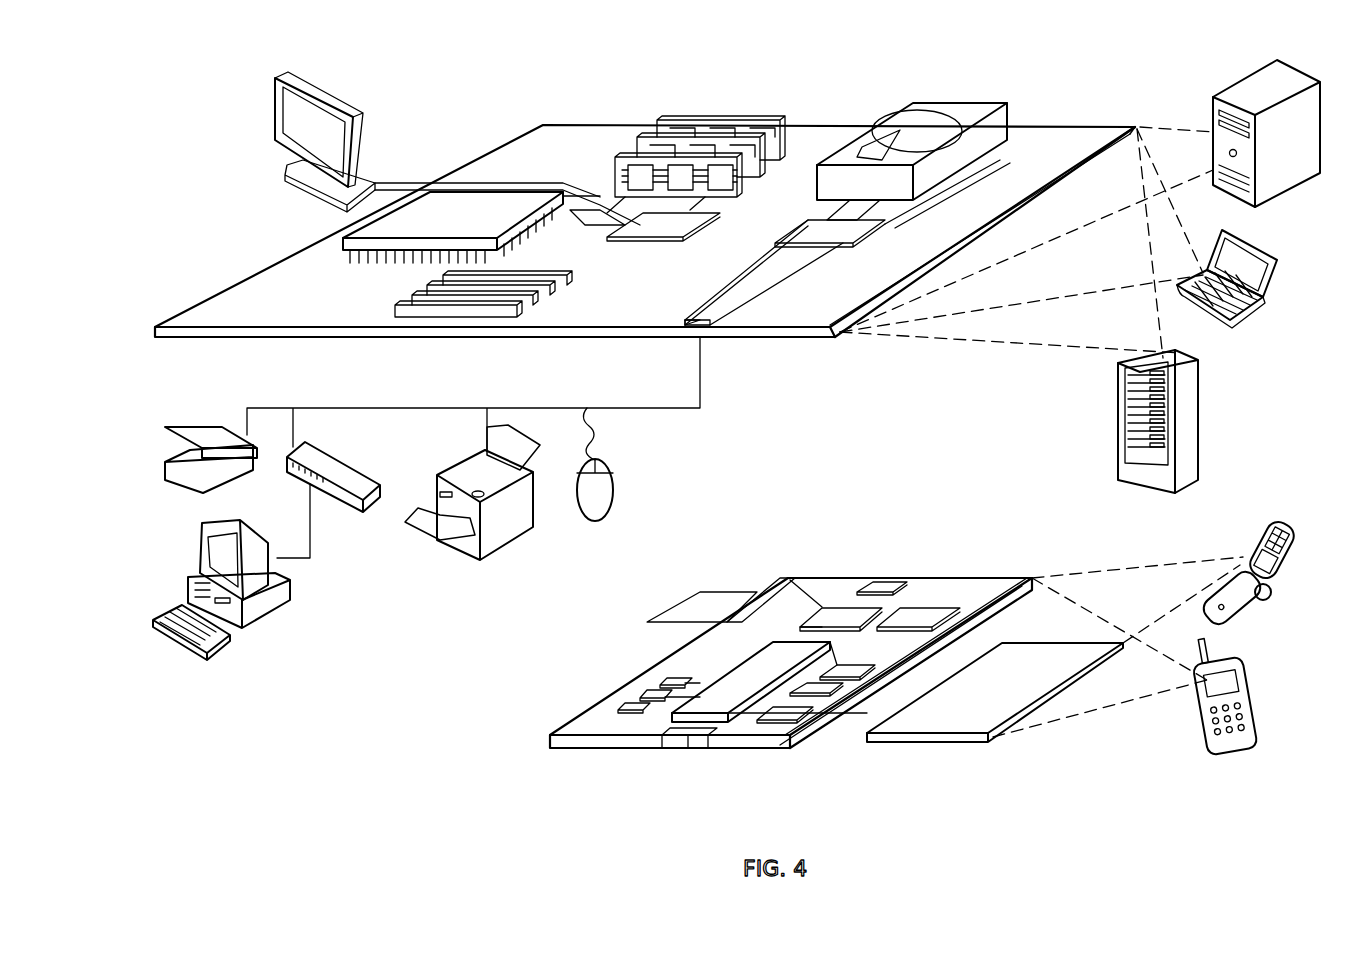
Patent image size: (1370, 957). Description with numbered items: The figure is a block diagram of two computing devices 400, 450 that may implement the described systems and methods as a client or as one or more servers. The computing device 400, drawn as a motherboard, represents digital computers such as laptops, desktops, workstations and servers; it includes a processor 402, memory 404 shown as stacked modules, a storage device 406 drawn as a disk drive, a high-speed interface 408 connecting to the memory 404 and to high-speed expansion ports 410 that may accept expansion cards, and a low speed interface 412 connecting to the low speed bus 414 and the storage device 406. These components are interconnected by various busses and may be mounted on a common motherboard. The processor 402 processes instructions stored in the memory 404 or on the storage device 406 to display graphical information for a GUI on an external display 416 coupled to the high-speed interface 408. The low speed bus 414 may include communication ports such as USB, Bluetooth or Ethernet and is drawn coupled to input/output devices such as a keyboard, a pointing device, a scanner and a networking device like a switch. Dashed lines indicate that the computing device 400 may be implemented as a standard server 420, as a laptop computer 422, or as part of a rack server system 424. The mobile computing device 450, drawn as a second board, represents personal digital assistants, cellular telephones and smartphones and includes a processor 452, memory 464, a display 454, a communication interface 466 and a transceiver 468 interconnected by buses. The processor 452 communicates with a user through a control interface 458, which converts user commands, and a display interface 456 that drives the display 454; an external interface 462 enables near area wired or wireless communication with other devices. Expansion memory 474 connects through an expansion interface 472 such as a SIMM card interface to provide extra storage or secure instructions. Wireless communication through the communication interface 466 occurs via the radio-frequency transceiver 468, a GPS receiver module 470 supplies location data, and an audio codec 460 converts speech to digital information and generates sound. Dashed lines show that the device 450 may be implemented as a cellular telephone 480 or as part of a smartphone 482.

The computing device 400 is at (473, 100).
The processor 402 is at (347, 242).
The memory 404 is at (665, 153).
The storage device 406 is at (902, 106).
The high-speed interface 408 is at (640, 228).
The high-speed expansion ports 410 is at (410, 297).
The low speed interface 412 is at (813, 225).
The low speed bus 414 is at (700, 323).
The display 416 is at (278, 72).
The standard server 420 is at (1213, 106).
The laptop computer 422 is at (1272, 254).
The rack server system 424 is at (1118, 443).
The computing device 450 is at (530, 742).
The processor 452 is at (722, 705).
The display 454 is at (955, 720).
The display interface 456 is at (795, 720).
The control interface 458 is at (820, 693).
The audio codec 460 is at (848, 672).
The external interface 462 is at (688, 740).
The memory 464 is at (645, 697).
The communication interface 466 is at (840, 617).
The transceiver 468 is at (918, 615).
The GPS receiver module 470 is at (892, 585).
The expansion interface 472 is at (764, 592).
The expansion memory 474 is at (697, 592).
The cellular telephone 480 is at (1252, 500).
The smartphone 482 is at (1183, 690).